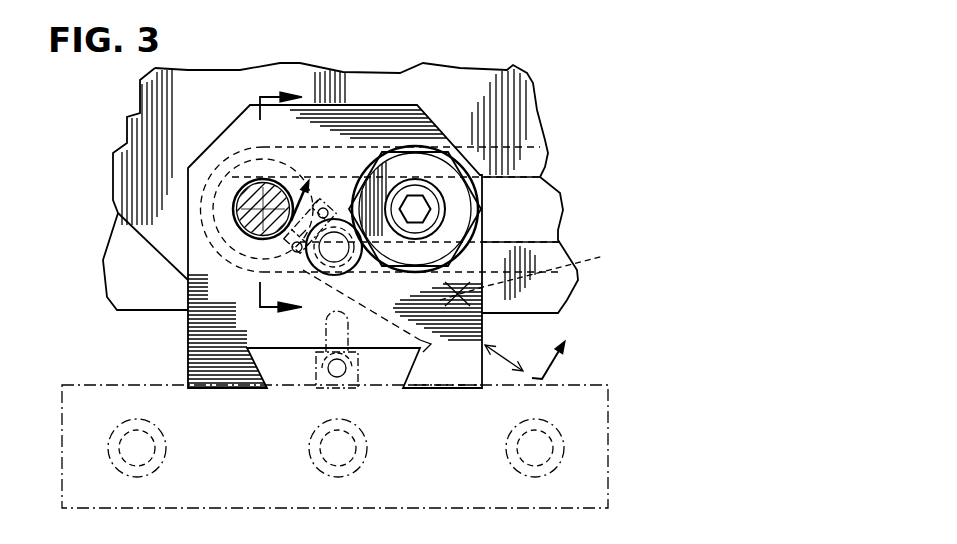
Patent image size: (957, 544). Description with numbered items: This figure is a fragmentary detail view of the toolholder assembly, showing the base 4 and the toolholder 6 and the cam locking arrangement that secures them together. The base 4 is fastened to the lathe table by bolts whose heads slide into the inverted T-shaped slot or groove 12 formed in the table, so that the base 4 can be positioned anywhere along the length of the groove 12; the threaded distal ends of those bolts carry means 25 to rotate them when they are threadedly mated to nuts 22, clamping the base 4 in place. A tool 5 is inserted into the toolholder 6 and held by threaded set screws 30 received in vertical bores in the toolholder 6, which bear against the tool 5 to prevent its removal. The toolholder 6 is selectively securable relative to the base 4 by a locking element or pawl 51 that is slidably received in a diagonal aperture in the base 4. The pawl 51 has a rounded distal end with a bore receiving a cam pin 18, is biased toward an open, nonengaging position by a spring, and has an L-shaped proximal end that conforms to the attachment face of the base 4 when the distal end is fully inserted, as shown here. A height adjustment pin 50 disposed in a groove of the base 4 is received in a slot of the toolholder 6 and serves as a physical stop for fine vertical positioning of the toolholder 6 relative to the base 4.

The base 4 is at (406, 130).
The tool 5 is at (279, 203).
The toolholder 6 is at (77, 485).
The slot or groove 12 is at (533, 207).
The cam pin 18 is at (313, 253).
The nut 22 is at (437, 168).
The means to rotate the bolts 25 is at (292, 185).
The set screw 30 is at (562, 458).
The height adjustment pin 50 is at (317, 388).
The locking element or pawl 51 is at (536, 274).